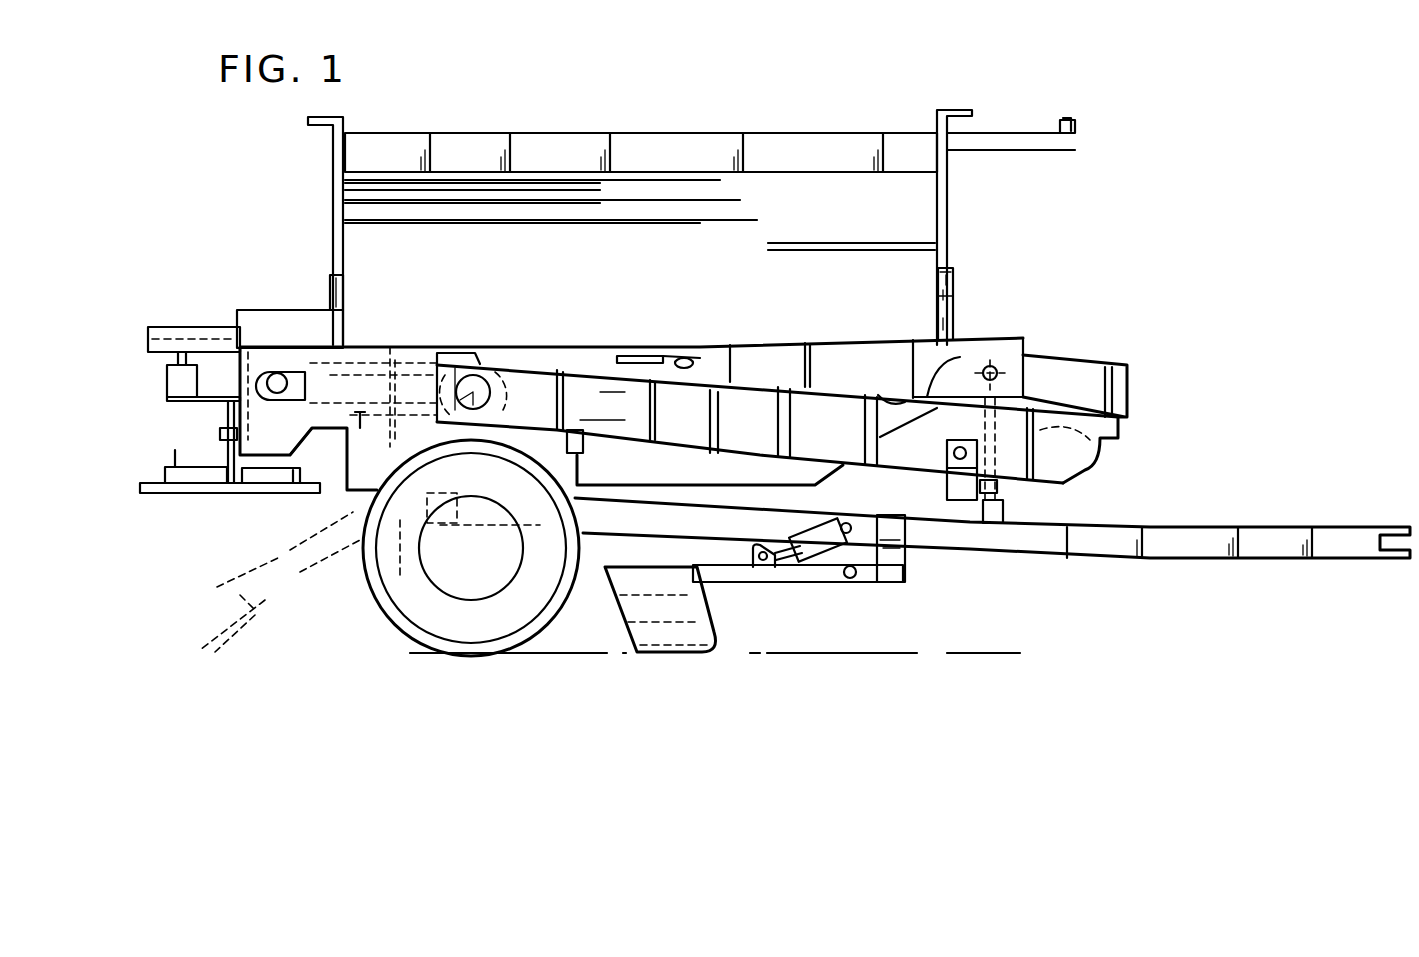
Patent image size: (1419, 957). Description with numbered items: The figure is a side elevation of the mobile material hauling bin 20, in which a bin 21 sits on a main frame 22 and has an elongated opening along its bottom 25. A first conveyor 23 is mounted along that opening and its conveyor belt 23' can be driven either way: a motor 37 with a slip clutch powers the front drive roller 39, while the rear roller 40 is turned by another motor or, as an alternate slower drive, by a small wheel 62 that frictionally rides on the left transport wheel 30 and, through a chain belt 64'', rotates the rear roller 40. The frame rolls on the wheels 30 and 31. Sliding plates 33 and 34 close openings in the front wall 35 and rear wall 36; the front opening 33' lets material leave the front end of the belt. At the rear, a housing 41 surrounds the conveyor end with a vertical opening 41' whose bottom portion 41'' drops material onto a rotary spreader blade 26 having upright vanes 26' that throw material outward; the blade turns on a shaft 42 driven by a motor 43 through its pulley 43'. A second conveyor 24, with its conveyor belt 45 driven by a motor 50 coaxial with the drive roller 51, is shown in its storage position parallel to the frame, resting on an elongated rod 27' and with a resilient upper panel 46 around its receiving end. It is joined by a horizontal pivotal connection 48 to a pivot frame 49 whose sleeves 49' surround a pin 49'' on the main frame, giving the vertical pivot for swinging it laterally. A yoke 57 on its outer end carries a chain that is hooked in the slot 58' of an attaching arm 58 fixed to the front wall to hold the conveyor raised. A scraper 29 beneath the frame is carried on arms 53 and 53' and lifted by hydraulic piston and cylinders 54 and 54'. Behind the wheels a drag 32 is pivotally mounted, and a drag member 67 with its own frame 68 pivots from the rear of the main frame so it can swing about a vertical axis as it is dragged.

The mobile material hauling bin 20 is at (641, 169).
The bin 21 is at (675, 133).
The main frame 22 is at (1210, 532).
The first conveyor 23 is at (631, 380).
The conveyor belt 23' is at (705, 341).
The second conveyor 24 is at (578, 370).
The bottom 25 is at (827, 467).
The rotary spreader blade 26 is at (227, 452).
The upright vanes 26' is at (230, 508).
The elongated rod 27' is at (580, 457).
The scraper 29 is at (703, 620).
The wheel 30 is at (430, 548).
The wheel 31 is at (393, 628).
The drag 32 is at (293, 587).
The plate 33 is at (970, 304).
The opening 33' is at (970, 272).
The plate 34 is at (322, 290).
The front wall 35 is at (948, 208).
The rear wall 36 is at (337, 223).
The motor 37 is at (277, 372).
The front drive roller 39 is at (993, 342).
The rear roller 40 is at (310, 380).
The housing 41 is at (301, 379).
The vertical opening 41' is at (318, 441).
The bottom portion of opening 41'' is at (265, 492).
The shaft 42 is at (227, 457).
The motor 43 is at (176, 376).
The pulley 43' is at (194, 325).
The conveyor belt 45 is at (897, 388).
The resilient upper panel 46 is at (1065, 363).
The horizontal pivotal connection 48 is at (945, 453).
The pivot frame 49 is at (946, 451).
The sleeves 49' is at (980, 524).
The pin 49'' is at (1029, 497).
The motor 50 is at (480, 385).
The drive roller 51 is at (463, 337).
The arm 53 is at (799, 563).
The arm 53' is at (758, 578).
The hydraulic piston and cylinder 54 is at (817, 526).
The hydraulic piston and cylinder 54' is at (768, 536).
The yoke 57 is at (635, 357).
The attaching arm 58 is at (1011, 154).
The slot 58' is at (1095, 136).
The small wheel 62 is at (560, 402).
The chain belt 64'' is at (368, 430).
The drag member 67 is at (257, 566).
The frame 68 is at (323, 533).